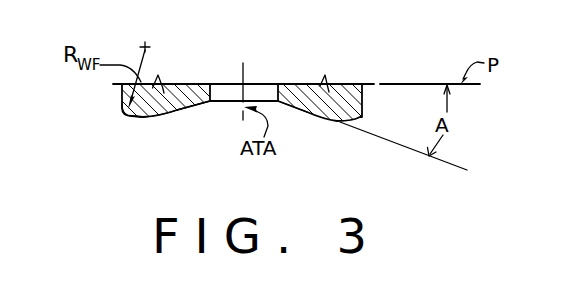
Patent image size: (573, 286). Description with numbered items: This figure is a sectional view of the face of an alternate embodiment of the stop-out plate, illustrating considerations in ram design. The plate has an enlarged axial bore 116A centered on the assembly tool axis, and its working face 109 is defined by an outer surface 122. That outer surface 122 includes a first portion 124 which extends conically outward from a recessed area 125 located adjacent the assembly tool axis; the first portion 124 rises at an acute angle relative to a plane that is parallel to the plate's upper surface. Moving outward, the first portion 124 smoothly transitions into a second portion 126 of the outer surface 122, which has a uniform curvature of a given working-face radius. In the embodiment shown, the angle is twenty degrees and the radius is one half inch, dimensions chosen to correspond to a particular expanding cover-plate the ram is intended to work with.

The working face 109 is at (182, 118).
The enlarged axial bore 116A is at (258, 84).
The outer surface 122 is at (168, 115).
The first portion 124 is at (193, 104).
The recessed area 125 is at (277, 112).
The second portion 126 is at (142, 118).